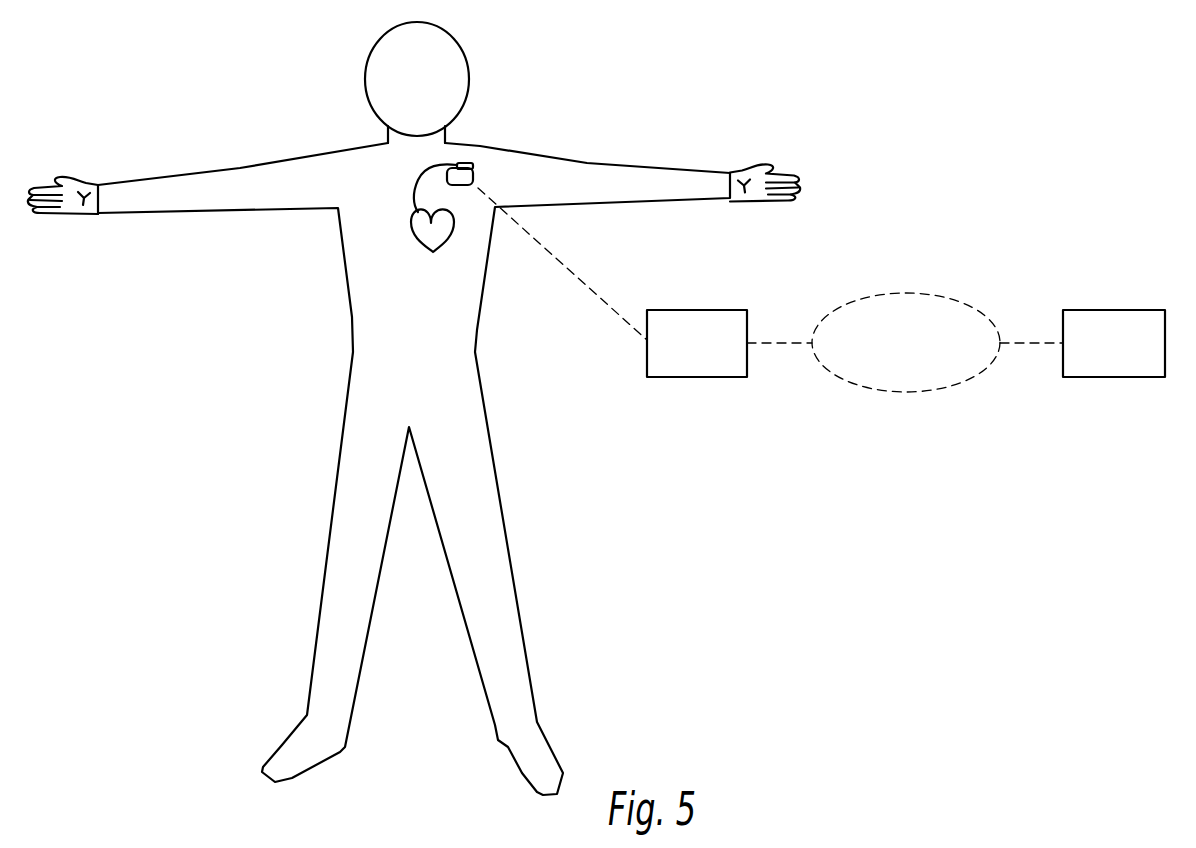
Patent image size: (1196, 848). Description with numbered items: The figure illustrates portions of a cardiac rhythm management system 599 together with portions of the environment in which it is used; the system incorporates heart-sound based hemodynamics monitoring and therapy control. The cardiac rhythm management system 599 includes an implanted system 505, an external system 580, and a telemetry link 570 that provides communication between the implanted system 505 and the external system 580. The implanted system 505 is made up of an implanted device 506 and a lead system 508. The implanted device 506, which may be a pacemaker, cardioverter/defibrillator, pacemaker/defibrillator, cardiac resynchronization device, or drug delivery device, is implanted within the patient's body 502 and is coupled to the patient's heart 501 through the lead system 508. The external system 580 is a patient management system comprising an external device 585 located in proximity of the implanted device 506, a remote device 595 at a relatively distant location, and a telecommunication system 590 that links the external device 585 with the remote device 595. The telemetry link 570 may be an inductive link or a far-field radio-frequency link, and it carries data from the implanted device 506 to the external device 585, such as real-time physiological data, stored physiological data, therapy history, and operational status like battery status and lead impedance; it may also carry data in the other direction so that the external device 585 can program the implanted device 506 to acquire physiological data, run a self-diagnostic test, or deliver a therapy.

The heart 501 is at (420, 250).
The patient's body 502 is at (353, 318).
The implanted system 505 is at (470, 41).
The implanted device 506 is at (476, 178).
The lead system 508 is at (411, 187).
The telemetry link 570 is at (585, 283).
The external system 580 is at (1010, 139).
The external device 585 is at (728, 308).
The telecommunication system 590 is at (938, 298).
The remote device 595 is at (1147, 310).
The cardiac rhythm management system 599 is at (992, 687).